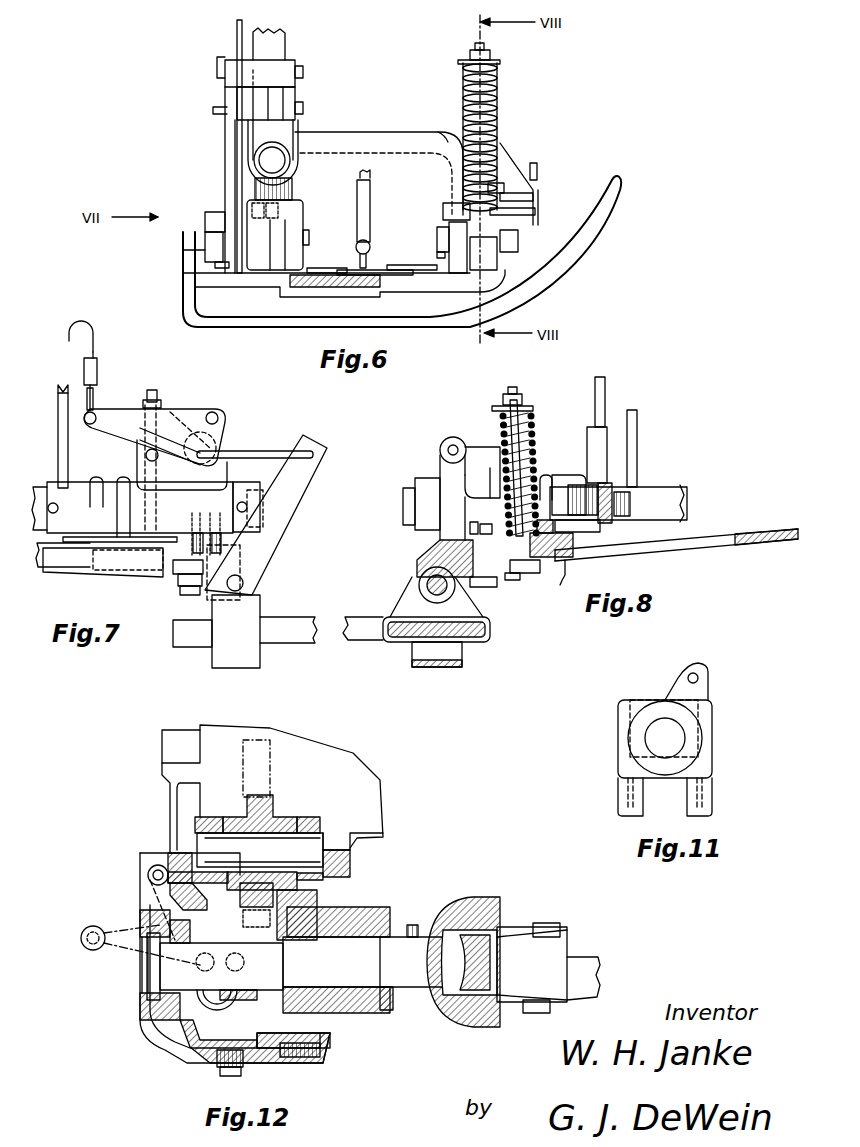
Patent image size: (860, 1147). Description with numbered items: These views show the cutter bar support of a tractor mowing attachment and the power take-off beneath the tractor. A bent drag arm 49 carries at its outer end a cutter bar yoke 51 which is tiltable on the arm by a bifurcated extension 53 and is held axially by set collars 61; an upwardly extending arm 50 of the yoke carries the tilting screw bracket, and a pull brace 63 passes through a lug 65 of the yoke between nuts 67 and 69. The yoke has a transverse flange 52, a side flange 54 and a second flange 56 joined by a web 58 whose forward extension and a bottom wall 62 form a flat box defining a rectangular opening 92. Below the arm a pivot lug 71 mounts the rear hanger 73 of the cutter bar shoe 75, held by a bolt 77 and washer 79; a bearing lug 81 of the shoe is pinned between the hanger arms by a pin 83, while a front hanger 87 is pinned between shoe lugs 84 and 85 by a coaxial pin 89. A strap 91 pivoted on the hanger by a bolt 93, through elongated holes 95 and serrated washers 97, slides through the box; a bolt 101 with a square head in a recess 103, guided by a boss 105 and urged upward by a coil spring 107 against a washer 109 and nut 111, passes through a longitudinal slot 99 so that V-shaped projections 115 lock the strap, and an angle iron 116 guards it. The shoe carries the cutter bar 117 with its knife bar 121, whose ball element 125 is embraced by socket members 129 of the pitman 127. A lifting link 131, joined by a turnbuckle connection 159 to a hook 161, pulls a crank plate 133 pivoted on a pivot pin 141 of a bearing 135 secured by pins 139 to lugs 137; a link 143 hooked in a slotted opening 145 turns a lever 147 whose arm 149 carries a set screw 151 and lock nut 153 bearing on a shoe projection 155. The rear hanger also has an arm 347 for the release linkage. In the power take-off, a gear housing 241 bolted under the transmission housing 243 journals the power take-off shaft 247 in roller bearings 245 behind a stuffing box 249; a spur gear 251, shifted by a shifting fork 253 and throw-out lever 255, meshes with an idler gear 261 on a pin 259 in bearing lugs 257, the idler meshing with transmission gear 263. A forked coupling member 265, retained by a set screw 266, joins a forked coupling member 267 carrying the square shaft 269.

In FIG. 6, the drag arm 49 is at (291, 166).
In FIG. 7, the drag arm 49 is at (265, 510).
In FIG. 8, the drag arm 49 is at (403, 505).
In FIG. 6, the upwardly extending arm 50 is at (286, 42).
In FIG. 7, the upwardly extending arm 50 is at (58, 405).
In FIG. 8, the upwardly extending arm 50 is at (605, 388).
In FIG. 6, the cutter bar yoke 51 is at (378, 126).
In FIG. 7, the cutter bar yoke 51 is at (108, 480).
In FIG. 8, the cutter bar yoke 51 is at (490, 484).
In FIG. 6, the transverse upstanding flange 52 is at (534, 197).
In FIG. 8, the bifurcated extension 53 is at (637, 430).
In FIG. 6, the side flange 54 is at (518, 158).
In FIG. 8, the side flange 54 is at (567, 475).
In FIG. 6, the second flange 56 is at (450, 137).
In FIG. 6, the web 58 is at (438, 173).
In FIG. 8, the web 58 is at (572, 578).
In FIG. 7, the set collars 61 is at (50, 484).
In FIG. 8, the set collars 61 is at (415, 480).
In FIG. 8, the bottom wall 62 is at (578, 560).
In FIG. 8, the pull brace 63 is at (665, 487).
In FIG. 8, the lug 65 is at (580, 530).
In FIG. 8, the nut 67 is at (552, 477).
In FIG. 8, the nut 69 is at (606, 483).
In FIG. 6, the pivot lug 71 is at (292, 190).
In FIG. 7, the pivot lug 71 is at (195, 533).
In FIG. 6, the rear hanger 73 is at (303, 212).
In FIG. 7, the rear hanger 73 is at (250, 557).
In FIG. 11, the rear hanger 73 is at (620, 720).
In FIG. 6, the cutter bar shoe 75 is at (600, 212).
In FIG. 7, the cutter bar shoe 75 is at (262, 612).
In FIG. 8, the cutter bar shoe 75 is at (492, 626).
In FIG. 6, the bolt 77 is at (281, 214).
In FIG. 7, the bolt 77 is at (221, 533).
In FIG. 6, the washer 79 is at (261, 214).
In FIG. 6, the bearing lug 81 is at (280, 252).
In FIG. 6, the pin 83 is at (309, 236).
In FIG. 7, the pin 83 is at (245, 583).
In FIG. 6, the bearing lug 84 is at (507, 245).
In FIG. 6, the bearing lug 85 is at (437, 255).
In FIG. 6, the front hanger 87 is at (483, 254).
In FIG. 8, the front hanger 87 is at (428, 546).
In FIG. 6, the pin 89 is at (437, 236).
In FIG. 8, the pin 89 is at (422, 577).
In FIG. 7, the strap 91 is at (55, 569).
In FIG. 8, the strap 91 is at (760, 539).
In FIG. 6, the rectangular opening 92 is at (536, 212).
In FIG. 6, the bolt 93 is at (505, 186).
In FIG. 8, the bolt 93 is at (483, 589).
In FIG. 8, the elongated holes 95 is at (520, 583).
In FIG. 8, the serrated washers 97 is at (505, 592).
In FIG. 8, the longitudinal slot 99 is at (681, 538).
In FIG. 6, the bolt 101 is at (482, 44).
In FIG. 7, the bolt 101 is at (152, 390).
In FIG. 8, the bolt 101 is at (512, 387).
In FIG. 8, the square recess 103 is at (528, 575).
In FIG. 8, the boss 105 is at (556, 528).
In FIG. 6, the coil spring 107 is at (498, 90).
In FIG. 8, the coil spring 107 is at (536, 428).
In FIG. 6, the washer 109 is at (501, 62).
In FIG. 8, the washer 109 is at (492, 409).
In FIG. 6, the nut 111 is at (491, 56).
In FIG. 8, the nut 111 is at (524, 400).
In FIG. 8, the V-shaped projections 115 is at (551, 545).
In FIG. 6, the angle iron 116 is at (538, 174).
In FIG. 7, the angle iron 116 is at (85, 576).
In FIG. 6, the cutter bar 117 is at (282, 290).
In FIG. 7, the cutter bar 117 is at (302, 644).
In FIG. 8, the cutter bar 117 is at (367, 644).
In FIG. 6, the knife bar 121 is at (375, 285).
In FIG. 6, the ball element 125 is at (370, 247).
In FIG. 6, the pitman 127 is at (371, 175).
In FIG. 6, the socket members 129 is at (371, 228).
In FIG. 6, the lifting link 131 is at (237, 32).
In FIG. 7, the lifting link 131 is at (93, 397).
In FIG. 6, the crank plate 133 is at (218, 75).
In FIG. 7, the crank plate 133 is at (180, 400).
In FIG. 6, the bearing 135 is at (296, 63).
In FIG. 7, the bearing 135 is at (162, 469).
In FIG. 6, the lugs 137 is at (296, 130).
In FIG. 7, the lugs 137 is at (205, 490).
In FIG. 8, the lugs 137 is at (440, 464).
In FIG. 6, the pins 139 is at (303, 108).
In FIG. 7, the pins 139 is at (146, 456).
In FIG. 6, the pivot pin 141 is at (303, 73).
In FIG. 7, the pivot pin 141 is at (213, 412).
In FIG. 6, the link 143 is at (214, 112).
In FIG. 7, the link 143 is at (270, 456).
In FIG. 7, the slotted opening 145 is at (138, 434).
In FIG. 6, the lever 147 is at (225, 150).
In FIG. 7, the lever 147 is at (318, 460).
In FIG. 6, the arm 149 is at (190, 250).
In FIG. 7, the arm 149 is at (178, 590).
In FIG. 6, the set screw 151 is at (212, 212).
In FIG. 7, the set screw 151 is at (185, 606).
In FIG. 6, the lock nut 153 is at (206, 232).
In FIG. 7, the lock nut 153 is at (182, 576).
In FIG. 7, the projection 155 is at (182, 640).
In FIG. 7, the turnbuckle connection 159 is at (97, 370).
In FIG. 7, the hook 161 is at (92, 336).
In FIG. 12, the gear housing 241 is at (195, 1050).
In FIG. 12, the transmission housing 243 is at (162, 746).
In FIG. 12, the roller bearings 245 is at (160, 1020).
In FIG. 12, the power take-off shaft 247 is at (390, 1008).
In FIG. 12, the stuffing box 249 is at (365, 908).
In FIG. 12, the spur gear 251 is at (260, 1002).
In FIG. 12, the shifting fork 253 is at (263, 955).
In FIG. 12, the throw-out lever 255 is at (148, 878).
In FIG. 12, the bearing lugs 257 is at (203, 818).
In FIG. 12, the pin 259 is at (327, 845).
In FIG. 12, the idler gear 261 is at (240, 815).
In FIG. 12, the gear 263 is at (268, 762).
In FIG. 12, the forked coupling member 265 is at (458, 898).
In FIG. 12, the set screw 266 is at (412, 925).
In FIG. 12, the forked coupling member 267 is at (522, 932).
In FIG. 12, the square shaft 269 is at (582, 956).
In FIG. 11, the arm 347 is at (708, 690).